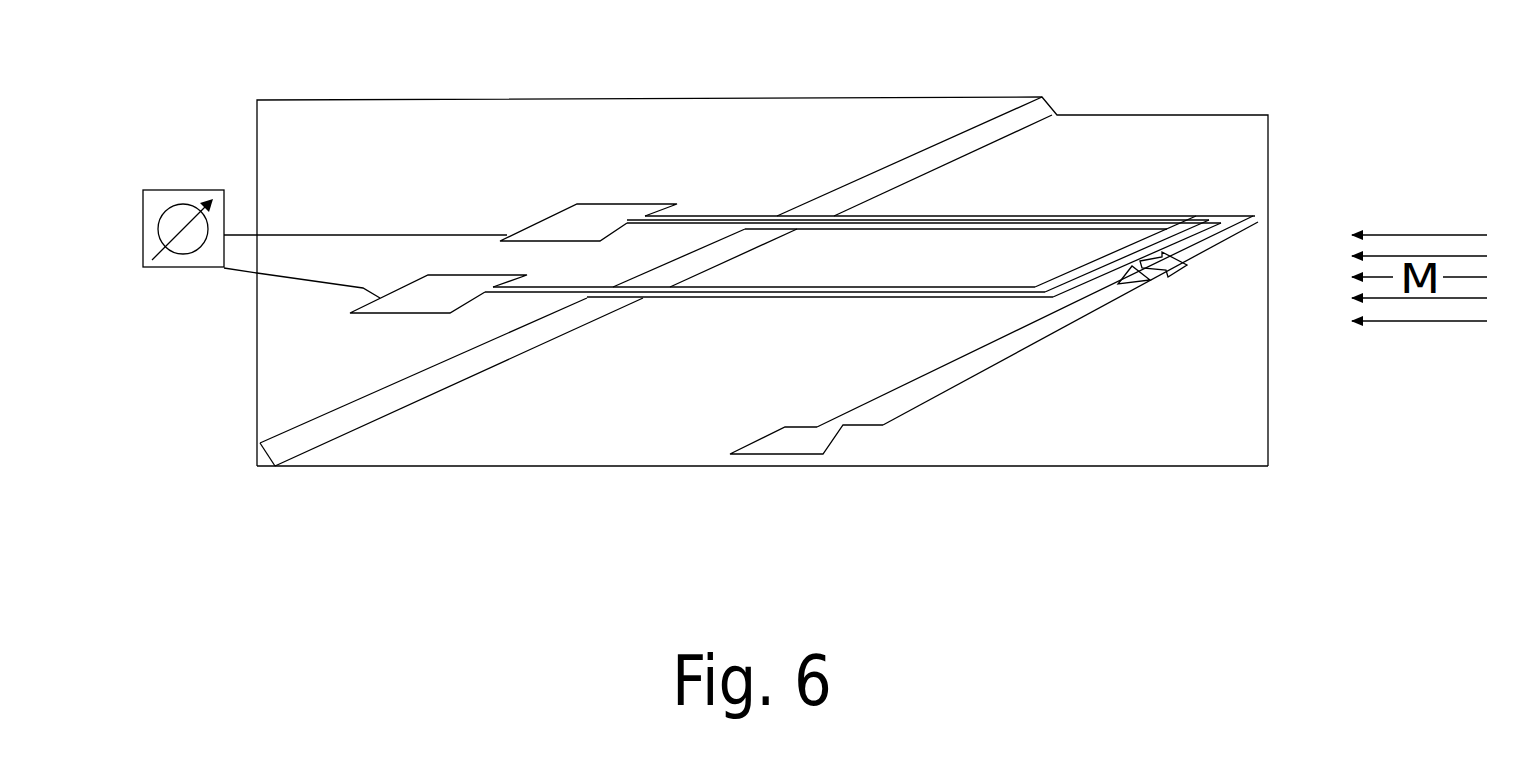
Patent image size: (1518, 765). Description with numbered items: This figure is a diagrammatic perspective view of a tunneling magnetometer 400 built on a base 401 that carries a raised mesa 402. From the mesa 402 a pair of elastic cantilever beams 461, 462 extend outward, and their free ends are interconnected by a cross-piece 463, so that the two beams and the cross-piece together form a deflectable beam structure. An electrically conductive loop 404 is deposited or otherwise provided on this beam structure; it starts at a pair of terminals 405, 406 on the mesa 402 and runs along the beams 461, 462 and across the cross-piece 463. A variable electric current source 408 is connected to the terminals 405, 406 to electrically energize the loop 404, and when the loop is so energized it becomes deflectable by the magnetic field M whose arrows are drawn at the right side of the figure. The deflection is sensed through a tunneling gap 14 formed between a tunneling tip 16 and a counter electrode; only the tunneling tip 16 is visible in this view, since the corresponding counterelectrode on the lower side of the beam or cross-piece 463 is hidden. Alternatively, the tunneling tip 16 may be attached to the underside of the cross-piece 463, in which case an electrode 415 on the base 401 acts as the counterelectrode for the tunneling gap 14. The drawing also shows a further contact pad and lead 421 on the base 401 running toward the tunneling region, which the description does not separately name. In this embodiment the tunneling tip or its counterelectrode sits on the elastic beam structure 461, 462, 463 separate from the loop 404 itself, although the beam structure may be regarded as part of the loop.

The tunneling magnetometer 400 is at (1077, 113).
The base 401 is at (762, 515).
The mesa 402 is at (601, 284).
The electrically conductive loop 404 is at (1120, 217).
The terminal 405 is at (410, 330).
The terminal 406 is at (590, 184).
The variable electric current source 408 is at (321, 197).
The cantilever beam 461 is at (769, 347).
The cantilever beam 462 is at (924, 183).
The cross-piece 463 is at (1290, 162).
The third lead with contact pad 421 is at (994, 390).
The tunneling gap 14 is at (1259, 236).
The tunneling tip 16 is at (1182, 326).
The electrode 415 is at (1256, 332).